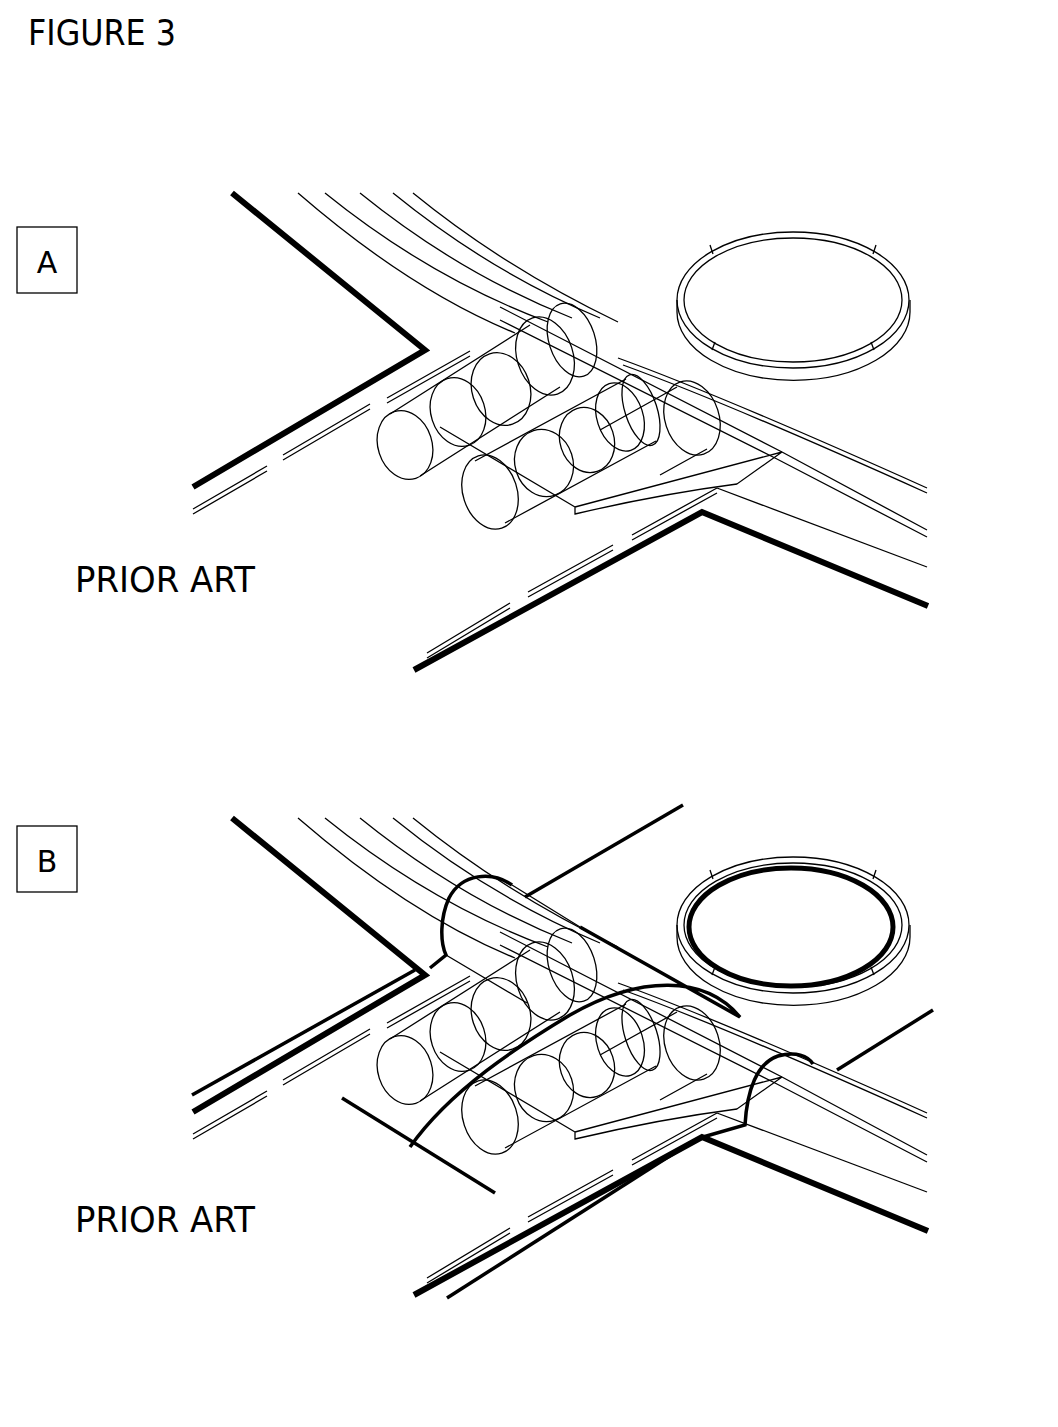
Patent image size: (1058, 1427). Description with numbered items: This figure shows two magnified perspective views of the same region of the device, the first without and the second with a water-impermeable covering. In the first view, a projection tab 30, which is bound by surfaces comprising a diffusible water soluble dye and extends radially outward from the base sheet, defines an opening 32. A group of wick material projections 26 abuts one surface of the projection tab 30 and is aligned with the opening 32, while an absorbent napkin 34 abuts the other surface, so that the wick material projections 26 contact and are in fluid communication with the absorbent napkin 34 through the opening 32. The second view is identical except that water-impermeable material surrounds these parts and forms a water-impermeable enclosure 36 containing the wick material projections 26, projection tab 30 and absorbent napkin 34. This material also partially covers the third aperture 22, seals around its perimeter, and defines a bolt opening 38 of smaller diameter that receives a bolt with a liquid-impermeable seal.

In FIG. 3A, the third aperture 22 is at (793, 306).
In FIG. 3B, the third aperture 22 is at (679, 930).
In FIG. 3A, the wick material projections 26 is at (653, 447).
In FIG. 3A, the projection tab 30 is at (293, 424).
In FIG. 3A, the opening 32 is at (614, 478).
In FIG. 3A, the absorbent napkin 34 is at (217, 503).
In FIG. 3B, the water-impermeable enclosure 36 is at (355, 1000).
In FIG. 3B, the bolt opening 38 is at (700, 893).